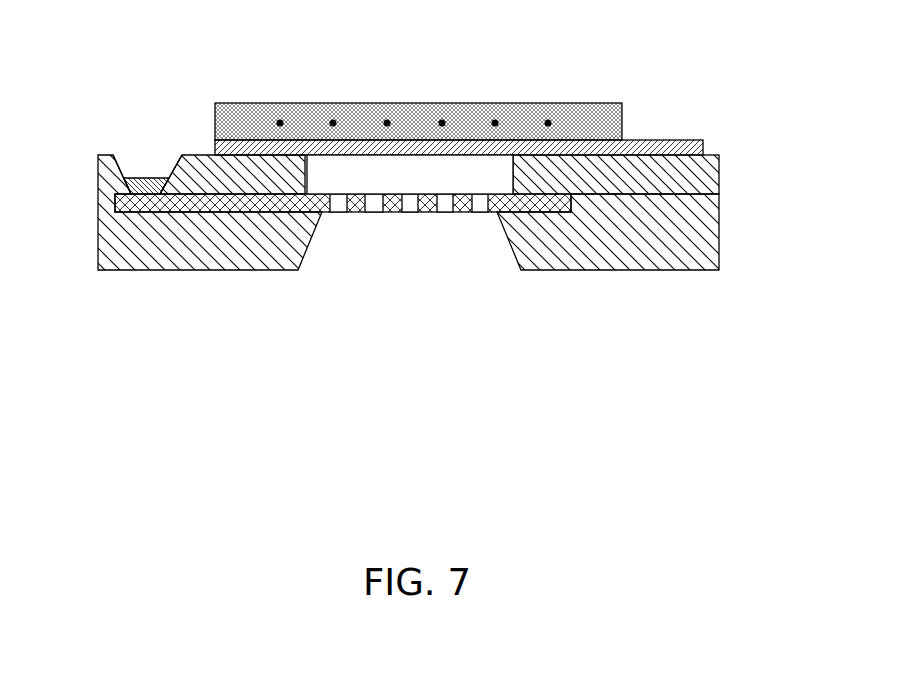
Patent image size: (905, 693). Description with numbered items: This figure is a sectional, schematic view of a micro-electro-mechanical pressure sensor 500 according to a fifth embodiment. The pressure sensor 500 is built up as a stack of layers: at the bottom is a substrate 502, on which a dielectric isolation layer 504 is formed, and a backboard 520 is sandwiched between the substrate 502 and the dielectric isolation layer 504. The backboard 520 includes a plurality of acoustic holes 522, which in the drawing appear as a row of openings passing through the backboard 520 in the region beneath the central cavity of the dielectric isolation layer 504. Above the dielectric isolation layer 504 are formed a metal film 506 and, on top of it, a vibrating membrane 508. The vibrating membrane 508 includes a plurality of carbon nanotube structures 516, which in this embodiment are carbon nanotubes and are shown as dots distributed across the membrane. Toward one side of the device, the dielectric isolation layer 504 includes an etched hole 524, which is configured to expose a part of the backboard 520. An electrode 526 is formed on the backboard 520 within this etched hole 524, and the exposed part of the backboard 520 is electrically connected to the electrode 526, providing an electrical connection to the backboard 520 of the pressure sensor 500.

The pressure sensor 500 is at (424, 36).
The substrate 502 is at (655, 242).
The dielectric isolation layer 504 is at (678, 180).
The metal film 506 is at (660, 139).
The vibrating membrane 508 is at (575, 102).
The carbon nanotube structures 516 is at (388, 120).
The backboard 520 is at (127, 200).
The acoustic holes 522 is at (408, 203).
The etched hole 524 is at (140, 168).
The electrode 526 is at (152, 190).